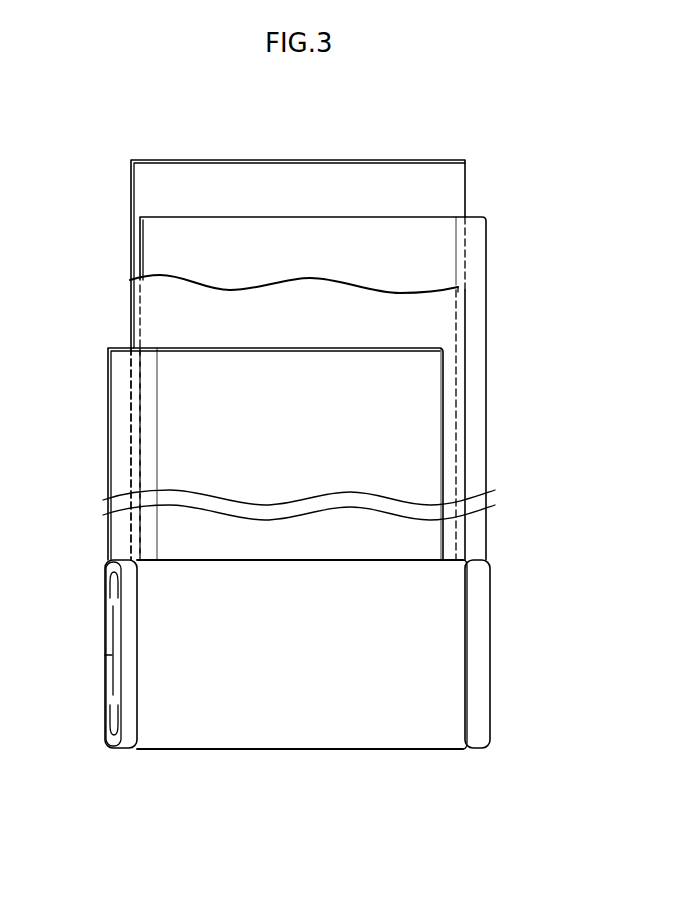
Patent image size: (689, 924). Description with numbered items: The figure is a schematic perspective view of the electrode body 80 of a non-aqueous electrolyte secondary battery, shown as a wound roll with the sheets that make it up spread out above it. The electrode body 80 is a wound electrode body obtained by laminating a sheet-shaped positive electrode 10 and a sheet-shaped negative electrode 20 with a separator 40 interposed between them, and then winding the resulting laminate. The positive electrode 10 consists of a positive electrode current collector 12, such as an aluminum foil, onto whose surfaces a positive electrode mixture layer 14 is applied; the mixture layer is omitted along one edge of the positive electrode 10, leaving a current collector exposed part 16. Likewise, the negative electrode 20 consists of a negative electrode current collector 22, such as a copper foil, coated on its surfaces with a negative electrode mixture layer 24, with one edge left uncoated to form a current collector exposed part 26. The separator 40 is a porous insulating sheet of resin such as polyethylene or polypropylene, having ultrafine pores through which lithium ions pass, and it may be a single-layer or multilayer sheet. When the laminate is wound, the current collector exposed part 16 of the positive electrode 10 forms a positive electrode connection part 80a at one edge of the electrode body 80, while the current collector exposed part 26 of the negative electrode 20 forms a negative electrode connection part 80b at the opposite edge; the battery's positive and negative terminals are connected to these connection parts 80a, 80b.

The positive electrode 10 is at (225, 454).
The positive electrode current collector 12 is at (108, 486).
The positive electrode mixture layer 14 is at (168, 368).
The current collector exposed part 16 is at (125, 450).
The negative electrode 20 is at (362, 386).
The negative electrode current collector 22 is at (487, 395).
The negative electrode mixture layer 24 is at (455, 238).
The current collector exposed part 26 is at (478, 447).
The separator 40 is at (152, 180).
The electrode body 80 is at (301, 692).
The positive electrode connection part 80a is at (125, 737).
The negative electrode connection part 80b is at (479, 735).